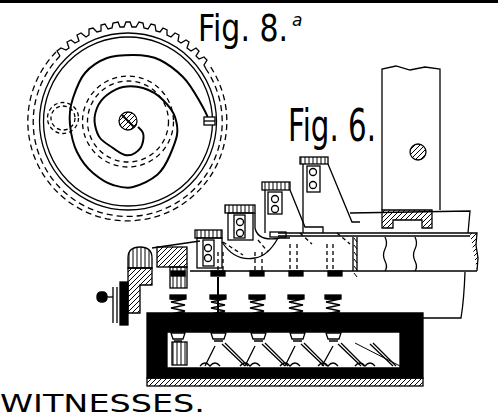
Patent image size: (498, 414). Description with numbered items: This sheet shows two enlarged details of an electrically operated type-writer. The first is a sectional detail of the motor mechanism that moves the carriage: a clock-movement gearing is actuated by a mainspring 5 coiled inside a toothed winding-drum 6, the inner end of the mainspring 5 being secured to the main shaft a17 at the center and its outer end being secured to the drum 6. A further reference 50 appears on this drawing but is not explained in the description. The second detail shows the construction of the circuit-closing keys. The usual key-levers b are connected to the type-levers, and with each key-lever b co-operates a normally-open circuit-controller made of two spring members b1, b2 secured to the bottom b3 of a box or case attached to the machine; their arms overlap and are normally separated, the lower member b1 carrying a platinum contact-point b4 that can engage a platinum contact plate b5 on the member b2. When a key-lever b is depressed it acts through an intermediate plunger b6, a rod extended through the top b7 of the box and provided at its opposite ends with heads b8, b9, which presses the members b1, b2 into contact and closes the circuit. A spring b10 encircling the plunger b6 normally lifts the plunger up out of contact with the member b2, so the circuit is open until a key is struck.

In FIG. 8A, the spring barrel and gear assembly 50 is at (139, 121).
In FIG. 8A, the mainspring 5 is at (187, 79).
In FIG. 8A, the drum 6 is at (210, 86).
In FIG. 8A, the main shaft a17 is at (138, 124).
In FIG. 6, the key-lever b is at (440, 272).
In FIG. 6, the spring member b1 is at (224, 385).
In FIG. 6, the spring member b2 is at (253, 395).
In FIG. 6, the bottom of box or case b3 is at (219, 303).
In FIG. 6, the platinum contact-point b4 is at (229, 348).
In FIG. 6, the platinum contact plate b5 is at (302, 387).
In FIG. 6, the plunger b6 is at (229, 305).
In FIG. 6, the top of box or case b7 is at (282, 299).
In FIG. 6, the head b8 is at (284, 305).
In FIG. 6, the head b9 is at (377, 350).
In FIG. 6, the spring b10 is at (262, 305).